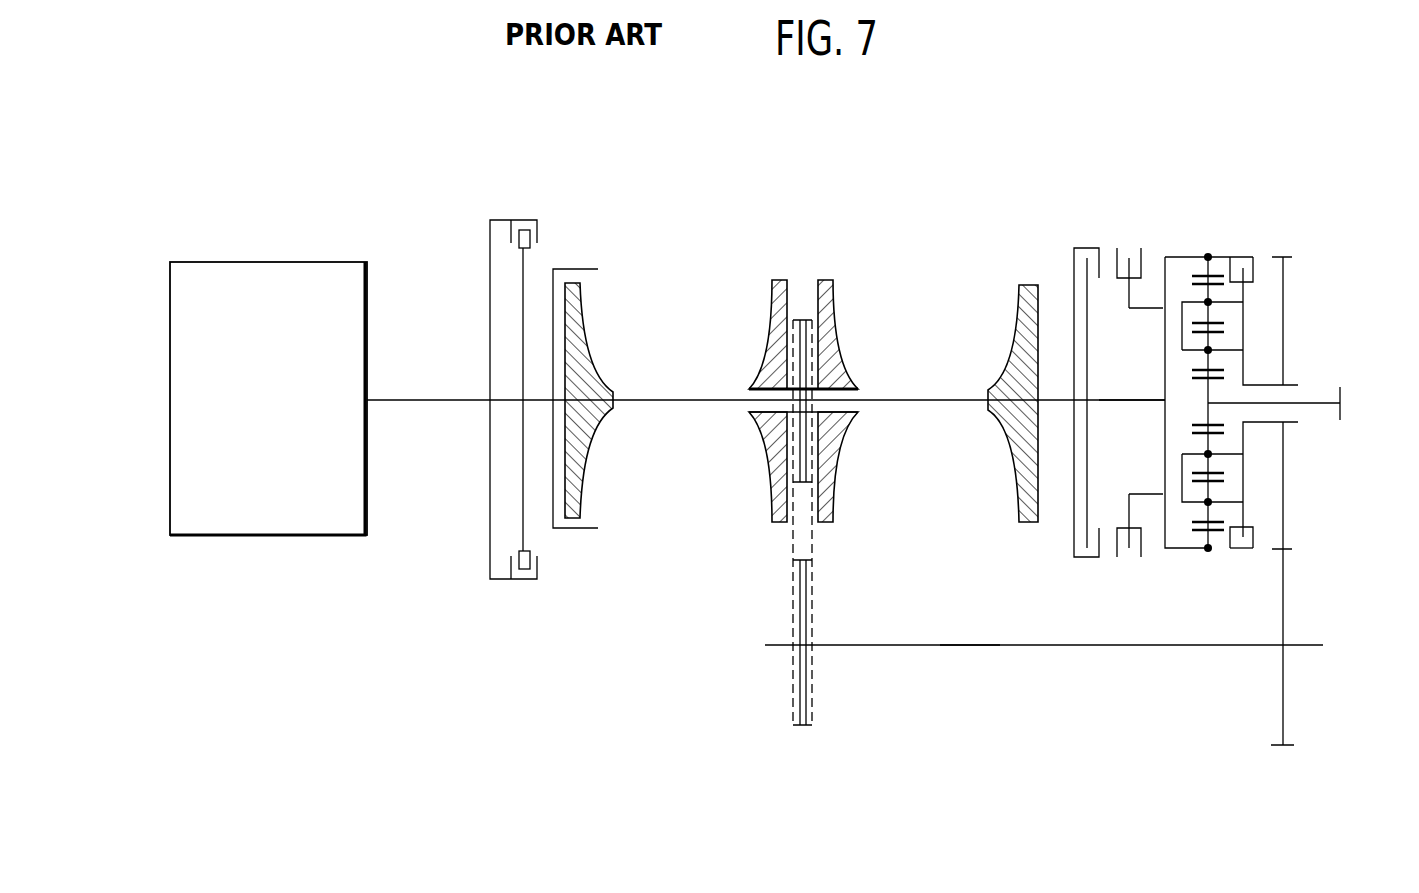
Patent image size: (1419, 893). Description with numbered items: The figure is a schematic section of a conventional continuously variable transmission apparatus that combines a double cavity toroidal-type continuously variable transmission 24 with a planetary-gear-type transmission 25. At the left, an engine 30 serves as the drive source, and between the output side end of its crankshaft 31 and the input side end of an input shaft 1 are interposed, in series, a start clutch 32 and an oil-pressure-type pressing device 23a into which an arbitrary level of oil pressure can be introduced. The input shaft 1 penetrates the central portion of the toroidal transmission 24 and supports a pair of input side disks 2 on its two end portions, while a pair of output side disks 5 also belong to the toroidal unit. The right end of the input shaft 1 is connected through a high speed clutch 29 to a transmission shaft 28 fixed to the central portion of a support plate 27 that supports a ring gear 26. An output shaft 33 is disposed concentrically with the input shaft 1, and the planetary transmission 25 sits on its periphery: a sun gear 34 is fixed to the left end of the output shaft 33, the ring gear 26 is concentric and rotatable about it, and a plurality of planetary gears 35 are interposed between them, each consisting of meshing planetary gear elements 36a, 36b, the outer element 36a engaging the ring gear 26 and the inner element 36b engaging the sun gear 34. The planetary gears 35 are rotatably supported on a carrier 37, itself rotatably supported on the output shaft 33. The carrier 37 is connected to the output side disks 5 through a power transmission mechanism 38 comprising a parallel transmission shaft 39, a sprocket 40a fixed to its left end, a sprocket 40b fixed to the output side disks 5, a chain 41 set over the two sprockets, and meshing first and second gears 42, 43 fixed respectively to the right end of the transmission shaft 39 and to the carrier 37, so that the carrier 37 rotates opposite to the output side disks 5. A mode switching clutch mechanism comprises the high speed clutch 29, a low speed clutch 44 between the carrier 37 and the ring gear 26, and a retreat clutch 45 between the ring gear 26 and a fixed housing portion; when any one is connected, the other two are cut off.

The input shaft 1 is at (917, 402).
The input side disks 2 is at (579, 285).
The output side disks 5 is at (826, 280).
The pressing device 23a is at (576, 538).
The toroidal-type continuously variable transmission 24 is at (637, 652).
The planetary-gear-type transmission 25 is at (1277, 214).
The ring gear 26 is at (1210, 551).
The support plate 27 is at (1163, 446).
The transmission shaft 28 is at (1104, 402).
The high speed clutch 29 is at (1086, 248).
The engine 30 is at (268, 280).
The crankshaft 31 is at (432, 398).
The start clutch 32 is at (503, 220).
The output shaft 33 is at (1313, 405).
The sun gear 34 is at (1210, 413).
The planetary gears 35 is at (1184, 298).
The planetary gear element 36a is at (1210, 297).
The planetary gear element 36b is at (1210, 344).
The carrier 37 is at (1290, 368).
The power transmission mechanism 38 is at (962, 650).
The transmission shaft 39 is at (1090, 647).
The sprocket 40a is at (795, 696).
The sprocket 40b is at (790, 438).
The chain 41 is at (793, 534).
The first gear 42 is at (1285, 681).
The second gear 43 is at (1285, 318).
The low speed clutch 44 is at (1247, 550).
The retreat clutch 45 is at (1130, 248).